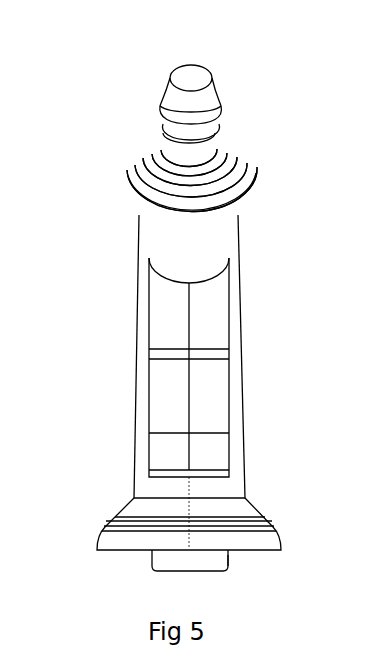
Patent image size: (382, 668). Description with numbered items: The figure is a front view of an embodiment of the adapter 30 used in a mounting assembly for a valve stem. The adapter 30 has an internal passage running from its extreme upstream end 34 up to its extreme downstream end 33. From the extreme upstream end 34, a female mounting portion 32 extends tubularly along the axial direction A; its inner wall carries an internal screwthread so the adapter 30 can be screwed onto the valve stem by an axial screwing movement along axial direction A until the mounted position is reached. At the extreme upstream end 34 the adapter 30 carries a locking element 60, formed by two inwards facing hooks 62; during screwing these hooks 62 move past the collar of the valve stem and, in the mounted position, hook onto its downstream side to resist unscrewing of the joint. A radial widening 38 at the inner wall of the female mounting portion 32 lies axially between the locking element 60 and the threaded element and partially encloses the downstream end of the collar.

The adapter 30 is at (276, 292).
The female mounting portion 32 is at (222, 403).
The extreme downstream end 33 is at (197, 55).
The extreme upstream end 34 is at (128, 592).
The radial widening 38 is at (123, 540).
The locking element 60 is at (241, 563).
The inwards facing hooks 62 is at (215, 561).
The axial direction A is at (188, 319).